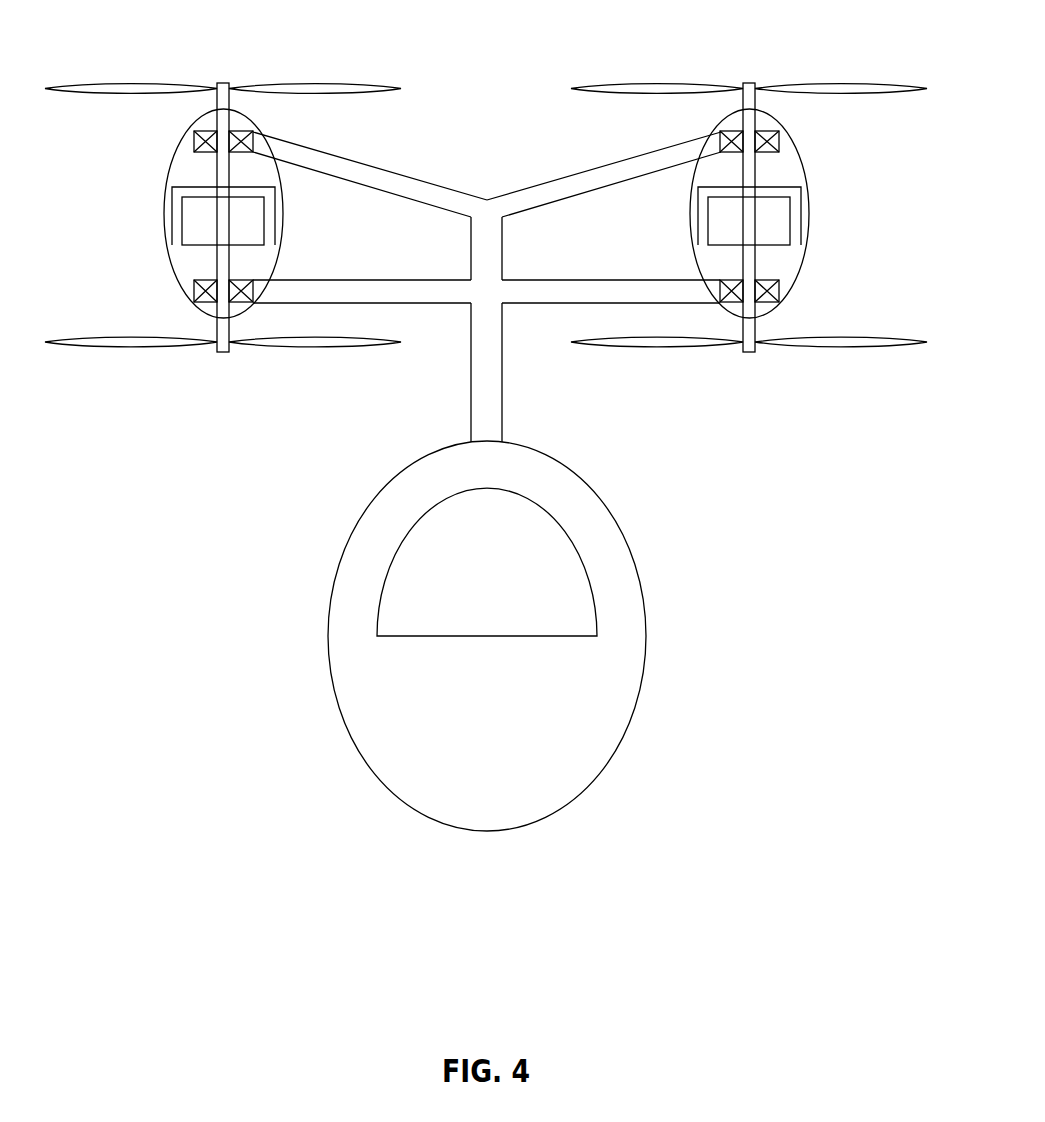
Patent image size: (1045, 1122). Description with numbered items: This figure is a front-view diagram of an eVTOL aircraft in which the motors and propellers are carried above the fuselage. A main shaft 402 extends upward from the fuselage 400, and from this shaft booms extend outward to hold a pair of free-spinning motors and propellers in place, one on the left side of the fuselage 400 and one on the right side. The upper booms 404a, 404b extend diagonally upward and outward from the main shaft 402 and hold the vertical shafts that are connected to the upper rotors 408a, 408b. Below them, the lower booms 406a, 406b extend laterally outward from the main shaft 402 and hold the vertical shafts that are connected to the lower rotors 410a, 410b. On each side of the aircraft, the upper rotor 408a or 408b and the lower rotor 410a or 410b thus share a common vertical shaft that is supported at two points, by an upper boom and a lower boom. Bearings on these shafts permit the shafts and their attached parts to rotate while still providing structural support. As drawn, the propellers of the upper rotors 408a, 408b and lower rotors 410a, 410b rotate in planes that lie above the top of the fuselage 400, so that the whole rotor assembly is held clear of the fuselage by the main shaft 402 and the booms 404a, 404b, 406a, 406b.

The fuselage 400 is at (645, 635).
The main shaft 402 is at (505, 384).
The upper boom 404a is at (395, 170).
The upper boom 404b is at (575, 168).
The lower boom 406a is at (350, 278).
The lower boom 406b is at (620, 278).
The upper rotor 408a is at (313, 82).
The upper rotor 408b is at (842, 82).
The lower rotor 410a is at (315, 348).
The lower rotor 410b is at (842, 348).